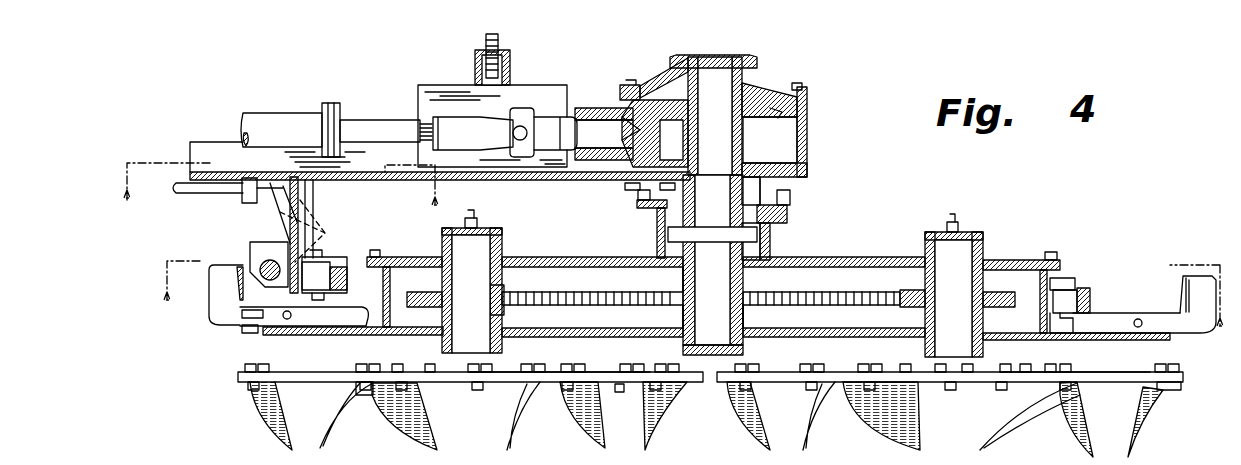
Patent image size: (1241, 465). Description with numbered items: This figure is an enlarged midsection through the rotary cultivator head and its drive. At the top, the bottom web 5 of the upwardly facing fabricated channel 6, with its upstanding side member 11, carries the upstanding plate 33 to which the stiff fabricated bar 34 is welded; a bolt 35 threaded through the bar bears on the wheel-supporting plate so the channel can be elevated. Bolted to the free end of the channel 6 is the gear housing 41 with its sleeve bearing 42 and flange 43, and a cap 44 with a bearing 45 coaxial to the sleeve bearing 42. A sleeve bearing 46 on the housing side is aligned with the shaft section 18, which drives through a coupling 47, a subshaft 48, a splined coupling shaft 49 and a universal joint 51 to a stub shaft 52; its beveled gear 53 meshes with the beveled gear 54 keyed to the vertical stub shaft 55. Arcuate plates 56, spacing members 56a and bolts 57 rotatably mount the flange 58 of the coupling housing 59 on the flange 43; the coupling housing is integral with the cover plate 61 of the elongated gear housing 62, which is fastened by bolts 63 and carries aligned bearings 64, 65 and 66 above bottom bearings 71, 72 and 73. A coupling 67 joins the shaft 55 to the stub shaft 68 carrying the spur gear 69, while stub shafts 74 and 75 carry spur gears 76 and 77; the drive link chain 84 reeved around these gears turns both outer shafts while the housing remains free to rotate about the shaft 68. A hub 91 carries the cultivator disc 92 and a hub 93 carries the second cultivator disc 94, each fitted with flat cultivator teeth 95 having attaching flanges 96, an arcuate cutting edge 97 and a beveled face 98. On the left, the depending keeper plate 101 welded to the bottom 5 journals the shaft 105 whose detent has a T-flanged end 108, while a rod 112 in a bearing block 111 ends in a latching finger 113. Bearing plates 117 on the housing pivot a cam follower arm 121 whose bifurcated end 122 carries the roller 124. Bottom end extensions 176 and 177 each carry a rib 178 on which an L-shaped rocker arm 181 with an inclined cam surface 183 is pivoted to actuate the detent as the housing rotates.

The bottom web 5 is at (228, 172).
The fabricated channel 6 is at (528, 192).
The side member 11 is at (213, 142).
The shaft section 18 is at (287, 113).
The upstanding plate 33 is at (550, 85).
The stiff fabricated bar 34 is at (510, 60).
The bolt 35 is at (486, 44).
The gear housing 41 is at (814, 128).
The sleeve bearing 42 is at (762, 186).
The flange 43 is at (772, 232).
The cap 44 is at (768, 86).
The bearing 45 is at (702, 66).
The sleeve bearing 46 is at (622, 106).
The coupling 47 is at (333, 103).
The subshaft 48 is at (375, 120).
The coupling shaft 49 is at (463, 118).
The universal joint 51 is at (512, 152).
The stub shaft 52 is at (608, 138).
The beveled gear 53 is at (650, 160).
The beveled gear 54 is at (778, 118).
The stub shaft 55 is at (724, 143).
The arcuate plates 56 is at (787, 192).
The spacing members 56a is at (640, 208).
The bolts 57 is at (788, 210).
The flange 58 is at (645, 226).
The coupling housing 59 is at (770, 246).
The cover plate 61 is at (870, 257).
The gear housing or cultivator head 62 is at (818, 338).
The bolts 63 is at (380, 250).
The bearing 64 is at (504, 258).
The bearing 65 is at (684, 278).
The bearing 66 is at (983, 250).
The coupling 67 is at (676, 250).
The stub shaft 68 is at (722, 300).
The spur gear 69 is at (684, 312).
The bearing 71 is at (503, 336).
The bearing 72 is at (745, 320).
The bearing 73 is at (985, 340).
The stub shaft 74 is at (480, 283).
The stub shaft 75 is at (960, 297).
The spur gear 76 is at (505, 286).
The spur gear 77 is at (920, 308).
The drive link chain 84 is at (590, 292).
The hub 91 is at (445, 372).
The cultivator disc 92 is at (582, 362).
The hub 93 is at (925, 372).
The cultivator disc 94 is at (1082, 376).
The cultivator teeth 95 is at (272, 416).
The attaching flanges 96 is at (646, 392).
The cutting edge 97 is at (340, 430).
The beveled face 98 is at (536, 430).
The keeper plate 101 is at (312, 190).
The shaft 105 is at (258, 256).
The T-flanged end 108 is at (322, 222).
The bearing block 111 is at (248, 203).
The rod 112 is at (196, 200).
The latching finger 113 is at (283, 212).
The bearing plates 117 is at (1075, 280).
The cam follower arm 121 is at (342, 282).
The bifurcated free end 122 is at (316, 257).
The roller 124 is at (295, 288).
The end extension 176 is at (330, 336).
The end extension 177 is at (1118, 336).
The rib 178 is at (366, 330).
The L-shaped rocker arm 181 is at (224, 326).
The inclined cam surface 183 is at (1192, 290).